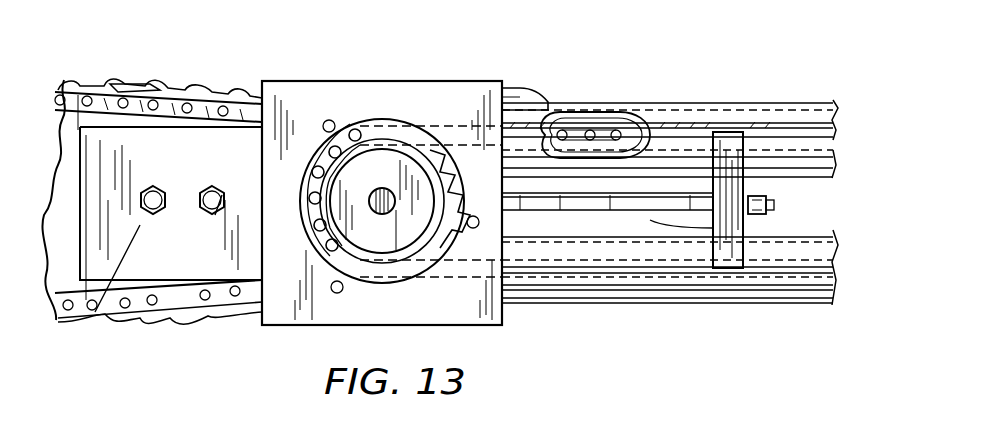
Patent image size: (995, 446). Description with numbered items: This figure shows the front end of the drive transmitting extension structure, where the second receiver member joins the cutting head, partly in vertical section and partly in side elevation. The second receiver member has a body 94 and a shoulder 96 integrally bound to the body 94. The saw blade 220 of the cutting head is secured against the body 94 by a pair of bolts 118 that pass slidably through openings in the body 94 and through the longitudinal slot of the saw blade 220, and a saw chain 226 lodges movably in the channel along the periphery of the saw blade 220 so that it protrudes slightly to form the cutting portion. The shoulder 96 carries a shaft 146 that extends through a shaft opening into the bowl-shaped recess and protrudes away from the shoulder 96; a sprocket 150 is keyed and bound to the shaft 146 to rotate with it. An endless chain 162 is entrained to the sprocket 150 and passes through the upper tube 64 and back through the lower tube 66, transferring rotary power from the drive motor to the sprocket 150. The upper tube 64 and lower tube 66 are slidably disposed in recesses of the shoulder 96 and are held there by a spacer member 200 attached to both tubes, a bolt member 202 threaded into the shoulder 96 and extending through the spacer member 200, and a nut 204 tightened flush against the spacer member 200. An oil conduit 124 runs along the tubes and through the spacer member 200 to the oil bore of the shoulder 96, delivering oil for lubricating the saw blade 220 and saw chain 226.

The body 94 is at (72, 312).
The saw blade 220 is at (66, 175).
The saw chain 226 is at (124, 84).
The bolts 118 is at (206, 208).
The shoulder 96 is at (302, 94).
The endless chain 162 is at (340, 147).
The shaft 146 is at (385, 214).
The sprocket 150 is at (413, 218).
The oil conduit 124 is at (535, 98).
The upper tube 64 is at (762, 112).
The lower tube 66 is at (652, 285).
The spacer member 200 is at (728, 268).
The bolt member 202 is at (600, 200).
The nut 204 is at (774, 208).